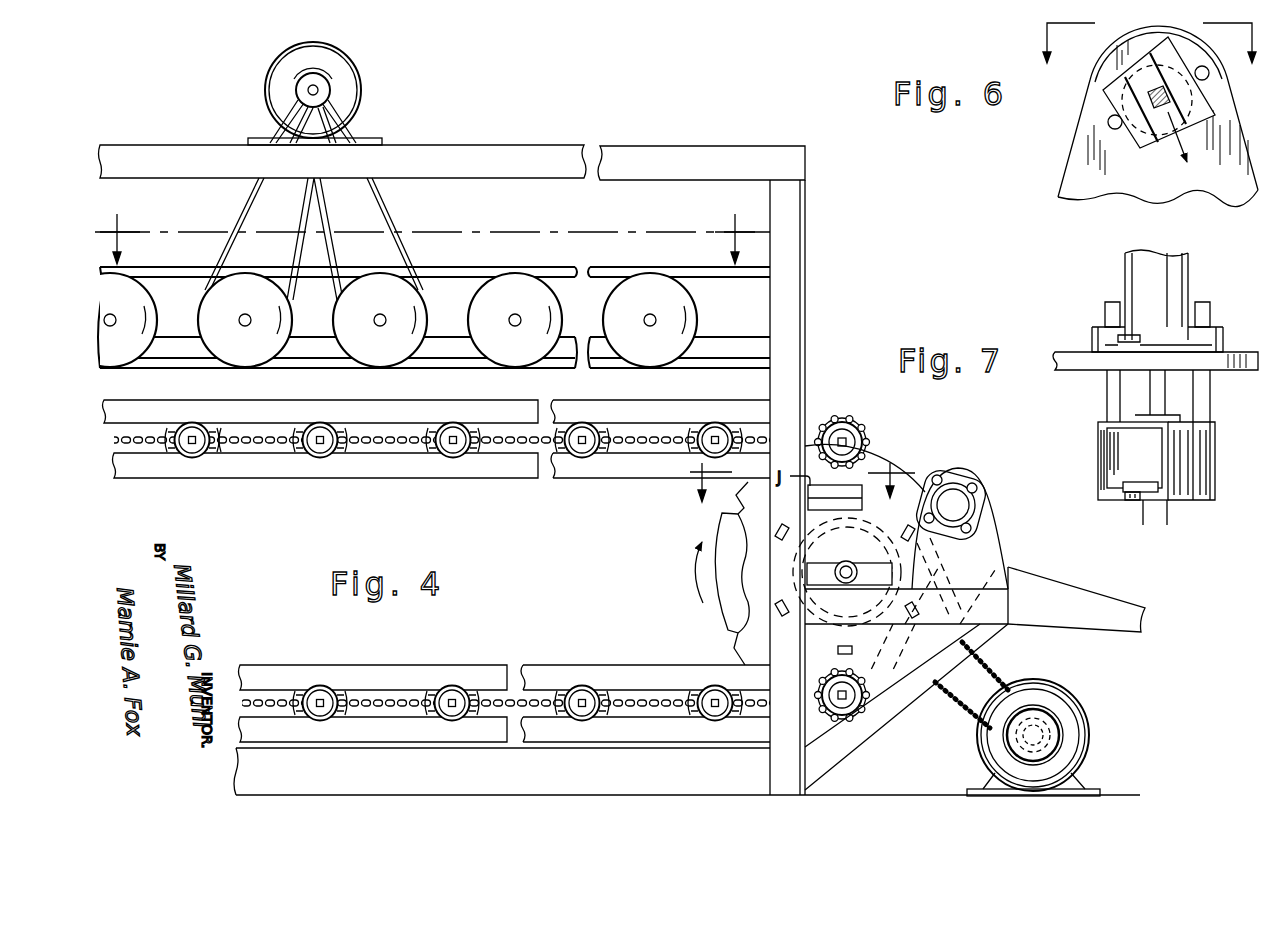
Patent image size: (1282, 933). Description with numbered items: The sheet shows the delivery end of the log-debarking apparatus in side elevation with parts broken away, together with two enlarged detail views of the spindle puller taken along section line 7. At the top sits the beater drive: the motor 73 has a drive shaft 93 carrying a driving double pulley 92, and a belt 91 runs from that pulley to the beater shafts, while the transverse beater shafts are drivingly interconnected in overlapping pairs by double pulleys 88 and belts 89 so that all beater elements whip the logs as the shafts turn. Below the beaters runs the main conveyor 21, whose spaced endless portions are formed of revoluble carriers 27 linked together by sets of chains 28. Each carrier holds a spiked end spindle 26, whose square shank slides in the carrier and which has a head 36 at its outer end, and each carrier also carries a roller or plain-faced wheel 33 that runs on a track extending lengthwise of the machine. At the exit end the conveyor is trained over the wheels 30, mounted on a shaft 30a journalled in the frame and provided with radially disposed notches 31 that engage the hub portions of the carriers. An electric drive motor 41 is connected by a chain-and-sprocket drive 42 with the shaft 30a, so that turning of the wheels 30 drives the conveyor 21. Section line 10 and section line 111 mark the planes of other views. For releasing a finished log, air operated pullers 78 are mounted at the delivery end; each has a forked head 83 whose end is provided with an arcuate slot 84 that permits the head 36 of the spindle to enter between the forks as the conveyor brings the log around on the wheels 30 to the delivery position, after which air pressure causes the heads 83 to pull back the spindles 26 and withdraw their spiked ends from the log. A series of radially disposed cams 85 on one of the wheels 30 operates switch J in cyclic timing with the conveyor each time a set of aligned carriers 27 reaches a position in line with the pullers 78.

In FIG. 4, the section line 10 is at (432, 229).
In FIG. 4, the main conveyor 21 is at (372, 450).
In FIG. 4, the spiked end spindle 26 is at (194, 436).
In FIG. 6, the spiked end spindle 26 is at (1148, 100).
In FIG. 7, the spiked end spindle 26 is at (1158, 522).
In FIG. 4, the revoluble carrier 27 is at (588, 428).
In FIG. 4, the chains 28 is at (138, 432).
In FIG. 4, the wheels at exit end 30 is at (726, 618).
In FIG. 4, the shaft 30a is at (866, 549).
In FIG. 4, the radially disposed notches 31 is at (727, 572).
In FIG. 4, the roller or plain-faced wheel 33 is at (222, 452).
In FIG. 4, the spindle head 36 is at (191, 458).
In FIG. 6, the spindle head 36 is at (1147, 77).
In FIG. 7, the spindle head 36 is at (1125, 493).
In FIG. 4, the electric drive motor 41 is at (1074, 709).
In FIG. 4, the chain-and-sprocket drive 42 is at (1005, 683).
In FIG. 4, the motor 73 is at (298, 44).
In FIG. 4, the air operated puller 78 is at (955, 497).
In FIG. 7, the air operated puller 78 is at (1148, 268).
In FIG. 7, the forked puller head 83 is at (1112, 448).
In FIG. 6, the arcuate slot 84 is at (1167, 140).
In FIG. 7, the arcuate slot 84 is at (1136, 500).
In FIG. 4, the radially disposed cams 85 is at (903, 530).
In FIG. 4, the double pulley 88 is at (210, 308).
In FIG. 4, the belt 89 is at (154, 276).
In FIG. 4, the belt 91 is at (305, 228).
In FIG. 4, the driving double pulley 92 is at (330, 88).
In FIG. 4, the drive shaft 93 is at (327, 72).
In FIG. 4, the section line 111 is at (797, 484).
In FIG. 6, the section line 7 is at (1148, 59).